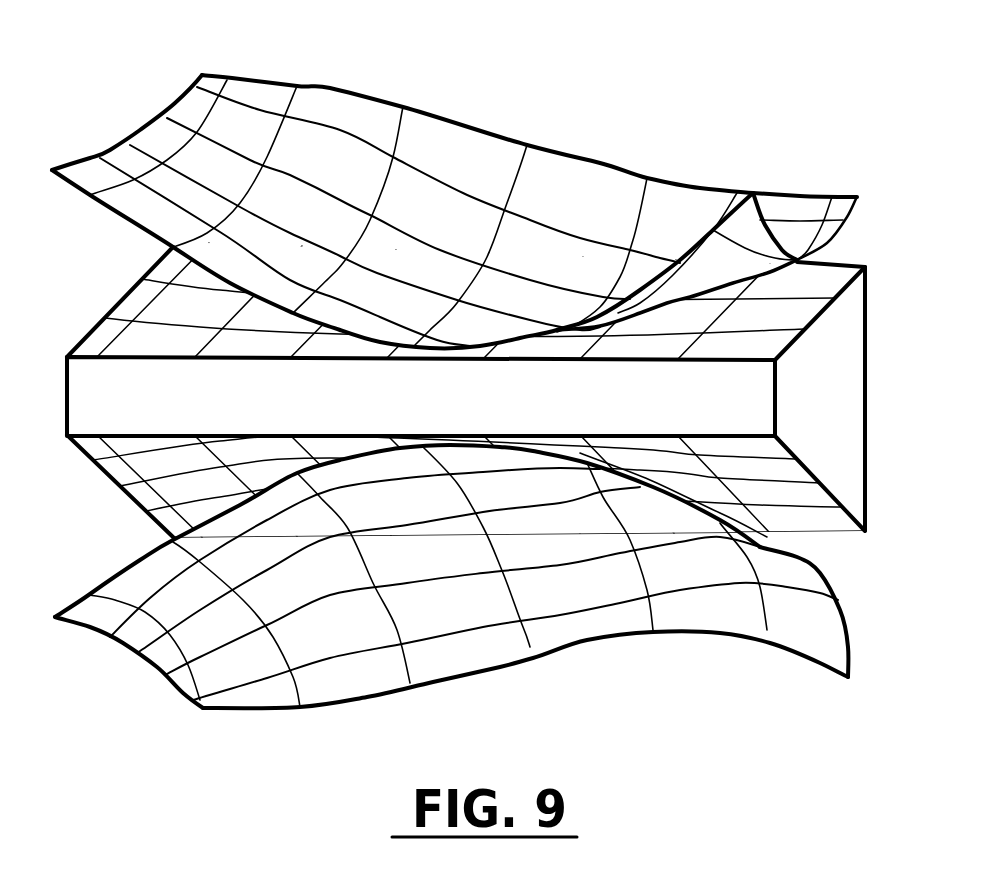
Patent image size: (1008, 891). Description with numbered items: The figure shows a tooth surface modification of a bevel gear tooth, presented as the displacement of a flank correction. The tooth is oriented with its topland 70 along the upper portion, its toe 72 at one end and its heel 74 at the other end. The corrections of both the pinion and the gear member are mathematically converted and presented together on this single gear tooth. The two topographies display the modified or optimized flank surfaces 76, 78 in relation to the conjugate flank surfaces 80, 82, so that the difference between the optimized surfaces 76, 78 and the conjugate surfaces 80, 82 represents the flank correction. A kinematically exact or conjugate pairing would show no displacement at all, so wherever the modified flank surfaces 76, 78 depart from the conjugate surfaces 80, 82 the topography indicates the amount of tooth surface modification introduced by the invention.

The topland 70 is at (80, 418).
The toe 72 is at (833, 398).
The heel 74 is at (133, 287).
The modified flank surface 76 is at (479, 207).
The modified flank surface 78 is at (475, 667).
The conjugate flank surface 80 is at (838, 260).
The conjugate flank surface 82 is at (803, 510).